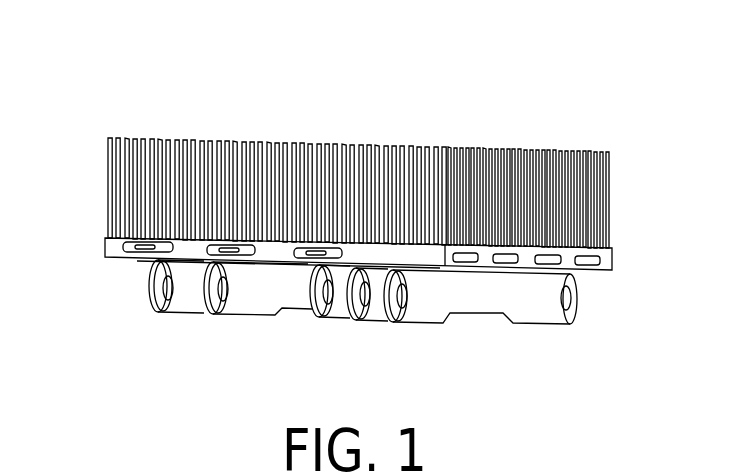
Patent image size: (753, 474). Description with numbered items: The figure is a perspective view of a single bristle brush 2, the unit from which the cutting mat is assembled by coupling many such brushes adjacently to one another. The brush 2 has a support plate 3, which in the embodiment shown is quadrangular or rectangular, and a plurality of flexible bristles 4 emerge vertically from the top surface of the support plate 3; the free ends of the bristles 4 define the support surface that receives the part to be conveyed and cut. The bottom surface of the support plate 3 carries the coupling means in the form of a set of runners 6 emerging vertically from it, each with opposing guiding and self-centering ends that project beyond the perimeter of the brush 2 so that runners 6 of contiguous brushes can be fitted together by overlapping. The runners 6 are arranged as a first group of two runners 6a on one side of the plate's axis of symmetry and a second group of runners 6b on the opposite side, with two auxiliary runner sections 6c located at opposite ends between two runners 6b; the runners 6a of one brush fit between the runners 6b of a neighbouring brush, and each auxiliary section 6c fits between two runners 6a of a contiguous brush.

The bristle brush 2 is at (615, 82).
The support plate 3 is at (605, 258).
The flexible bristles 4 is at (123, 185).
The runners 6 is at (127, 303).
The first group of runners 6a is at (240, 300).
The second group of runners 6b is at (340, 313).
The auxiliary runner sections 6c is at (368, 312).